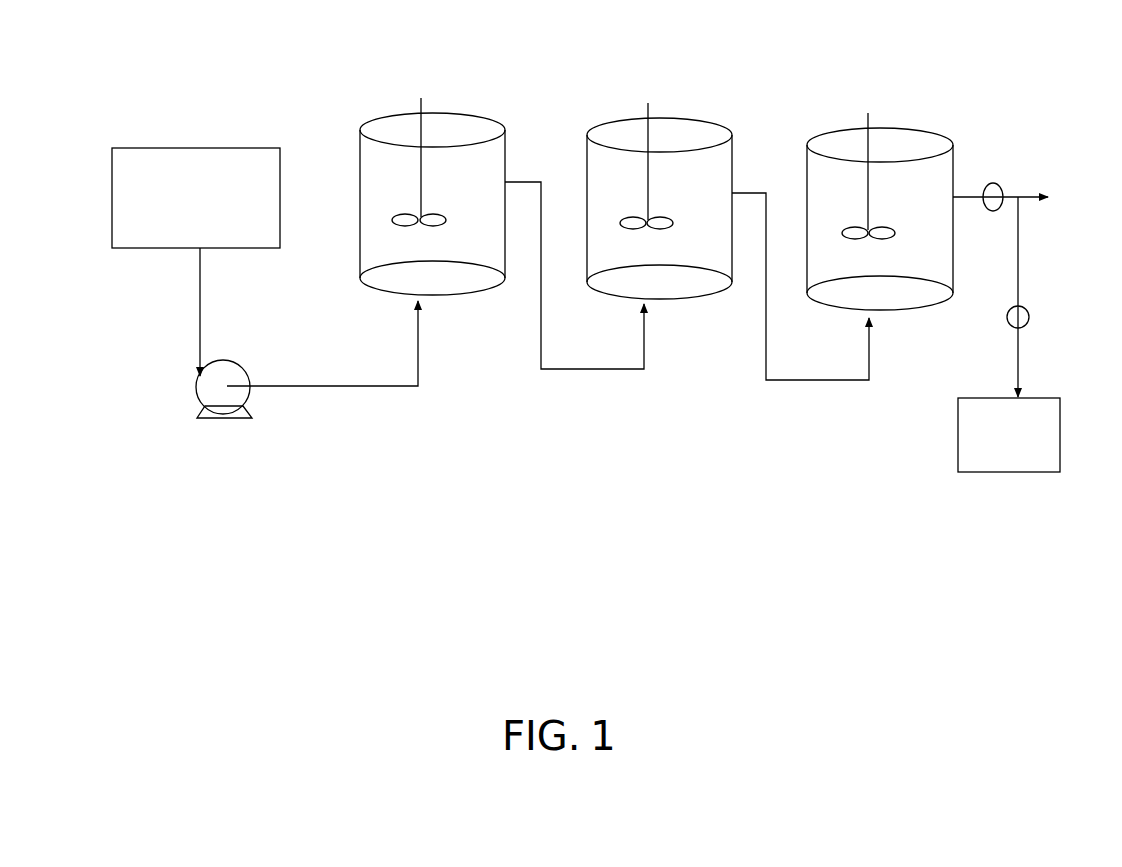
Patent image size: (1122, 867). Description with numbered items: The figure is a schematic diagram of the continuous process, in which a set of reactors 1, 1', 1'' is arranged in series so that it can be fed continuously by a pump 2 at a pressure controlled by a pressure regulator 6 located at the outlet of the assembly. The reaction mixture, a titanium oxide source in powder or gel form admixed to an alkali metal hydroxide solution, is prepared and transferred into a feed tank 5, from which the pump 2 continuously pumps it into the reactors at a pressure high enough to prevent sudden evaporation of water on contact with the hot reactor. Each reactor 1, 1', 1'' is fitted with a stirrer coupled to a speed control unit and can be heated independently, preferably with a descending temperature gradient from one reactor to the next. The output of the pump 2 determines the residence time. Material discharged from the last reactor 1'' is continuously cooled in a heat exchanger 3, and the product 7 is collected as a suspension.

The reactor 1 is at (432, 167).
The reactor 1' is at (659, 164).
The reactor 1'' is at (880, 180).
The pump 2 is at (252, 447).
The heat exchanger 3 is at (995, 177).
The feed tank 5 is at (152, 135).
The pressure regulator 6 is at (1030, 298).
The product 7 is at (950, 440).